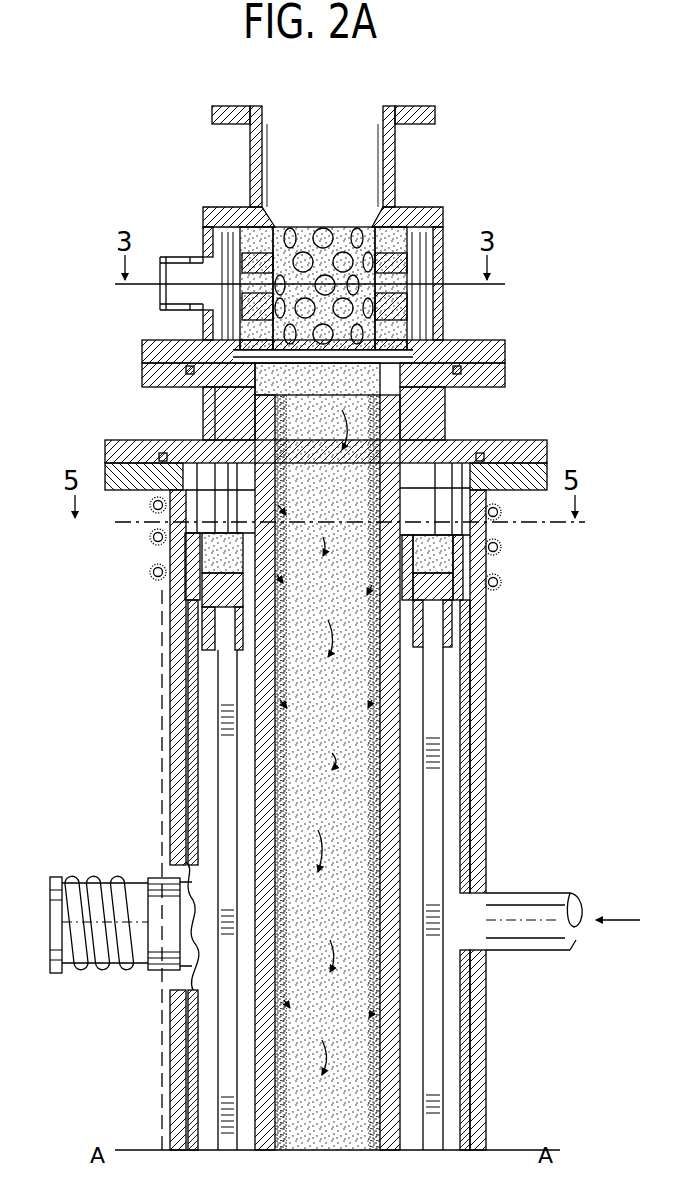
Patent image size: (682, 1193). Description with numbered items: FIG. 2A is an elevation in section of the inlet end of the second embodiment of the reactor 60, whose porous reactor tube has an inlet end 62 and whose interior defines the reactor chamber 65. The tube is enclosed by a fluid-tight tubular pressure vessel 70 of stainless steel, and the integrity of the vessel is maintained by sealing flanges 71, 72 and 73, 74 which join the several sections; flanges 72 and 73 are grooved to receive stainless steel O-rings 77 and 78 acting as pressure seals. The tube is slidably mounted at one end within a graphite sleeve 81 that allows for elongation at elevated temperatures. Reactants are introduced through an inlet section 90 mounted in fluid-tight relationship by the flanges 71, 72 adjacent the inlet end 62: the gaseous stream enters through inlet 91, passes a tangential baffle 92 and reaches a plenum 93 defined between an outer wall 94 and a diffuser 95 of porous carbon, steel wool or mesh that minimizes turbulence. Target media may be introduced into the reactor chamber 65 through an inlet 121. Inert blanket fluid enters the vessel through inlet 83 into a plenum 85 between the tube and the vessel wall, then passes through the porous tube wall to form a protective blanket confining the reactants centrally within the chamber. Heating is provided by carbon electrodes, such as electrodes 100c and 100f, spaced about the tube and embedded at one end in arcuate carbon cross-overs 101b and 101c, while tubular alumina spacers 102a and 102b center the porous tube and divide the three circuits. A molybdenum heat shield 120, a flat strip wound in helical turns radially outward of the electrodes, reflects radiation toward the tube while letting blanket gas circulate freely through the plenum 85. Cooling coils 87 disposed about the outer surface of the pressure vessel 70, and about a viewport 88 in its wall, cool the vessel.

The inlet 121 is at (323, 108).
The tangential baffle 92 is at (231, 207).
The diffuser 95 is at (392, 218).
The inlet section 90 is at (446, 217).
The inlet 91 is at (181, 254).
The outer wall 94 is at (444, 258).
The plenum 93 is at (418, 304).
The O-ring 77 is at (458, 364).
The sealing flange 71 is at (490, 353).
The sealing flange 72 is at (490, 378).
The graphite sleeve 81 is at (205, 412).
The inlet end 62 is at (402, 410).
The O-ring 78 is at (482, 452).
The sealing flange 73 is at (540, 452).
The sealing flange 74 is at (518, 489).
The tubular alumina spacer 102a is at (195, 551).
The tubular alumina spacer 102b is at (465, 606).
The cooling coils 87 is at (518, 543).
The cross-over 101c is at (210, 624).
The cross-over 101b is at (455, 640).
The reactor 60 is at (158, 688).
The plenum 85 is at (450, 744).
The heat shield 120 is at (193, 743).
The carbon electrode 100c is at (432, 823).
The carbon electrode 100f is at (225, 1060).
The pressure vessel 70 is at (182, 812).
The reactor chamber 65 is at (341, 892).
The inlet 83 is at (515, 903).
The viewport 88 is at (48, 918).